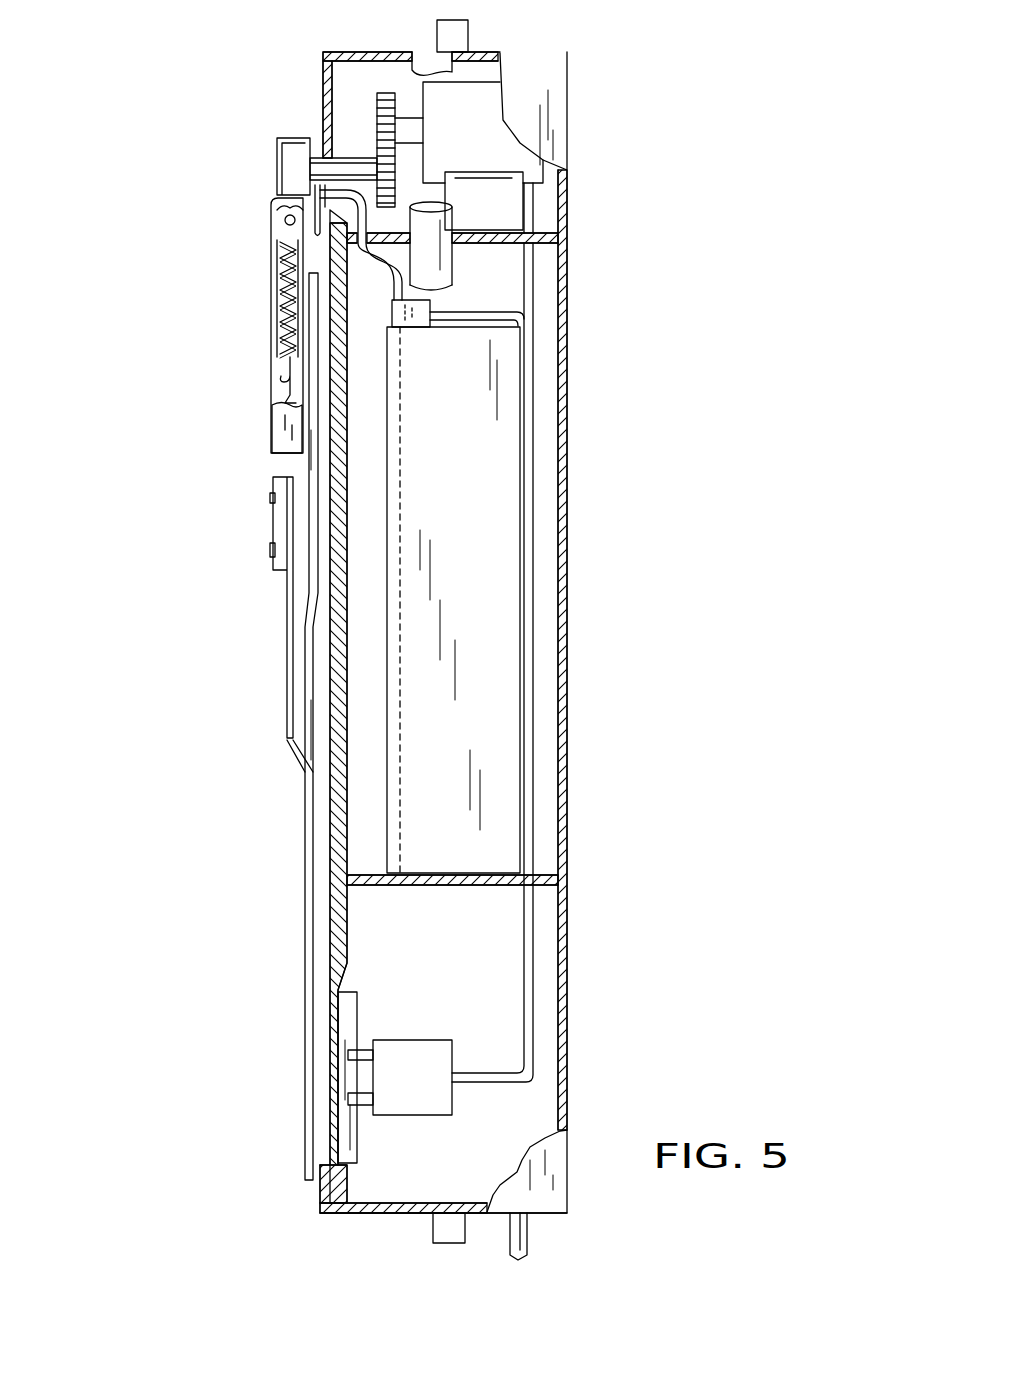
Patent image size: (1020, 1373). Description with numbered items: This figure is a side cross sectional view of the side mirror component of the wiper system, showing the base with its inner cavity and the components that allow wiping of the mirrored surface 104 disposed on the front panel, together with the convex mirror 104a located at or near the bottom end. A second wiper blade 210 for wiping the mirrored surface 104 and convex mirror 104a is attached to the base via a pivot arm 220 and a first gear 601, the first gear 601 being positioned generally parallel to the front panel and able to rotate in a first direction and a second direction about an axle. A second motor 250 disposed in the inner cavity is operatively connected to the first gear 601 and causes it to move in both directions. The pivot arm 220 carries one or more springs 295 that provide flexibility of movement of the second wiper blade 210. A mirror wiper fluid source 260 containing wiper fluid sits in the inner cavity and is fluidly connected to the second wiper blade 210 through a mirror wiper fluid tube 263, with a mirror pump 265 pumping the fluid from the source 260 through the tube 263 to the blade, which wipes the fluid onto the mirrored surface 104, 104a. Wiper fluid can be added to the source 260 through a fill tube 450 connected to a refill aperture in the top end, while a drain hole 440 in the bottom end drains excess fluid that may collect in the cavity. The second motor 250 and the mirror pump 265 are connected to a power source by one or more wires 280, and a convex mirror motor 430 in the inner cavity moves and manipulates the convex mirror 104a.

The mirrored surface 104 is at (332, 810).
The convex mirror 104a is at (333, 1043).
The second wiper blade 210 is at (320, 910).
The pivot arm 220 is at (290, 608).
The second motor 250 is at (473, 130).
The mirror wiper fluid source 260 is at (487, 508).
The mirror wiper fluid tube 263 is at (337, 207).
The mirror pump 265 is at (420, 307).
The wires 280 is at (530, 1078).
The springs 295 is at (287, 315).
The convex mirror motor 430 is at (418, 1070).
The drain hole 440 is at (387, 1207).
The fill tube 450 is at (428, 259).
The first gear 601 is at (380, 108).